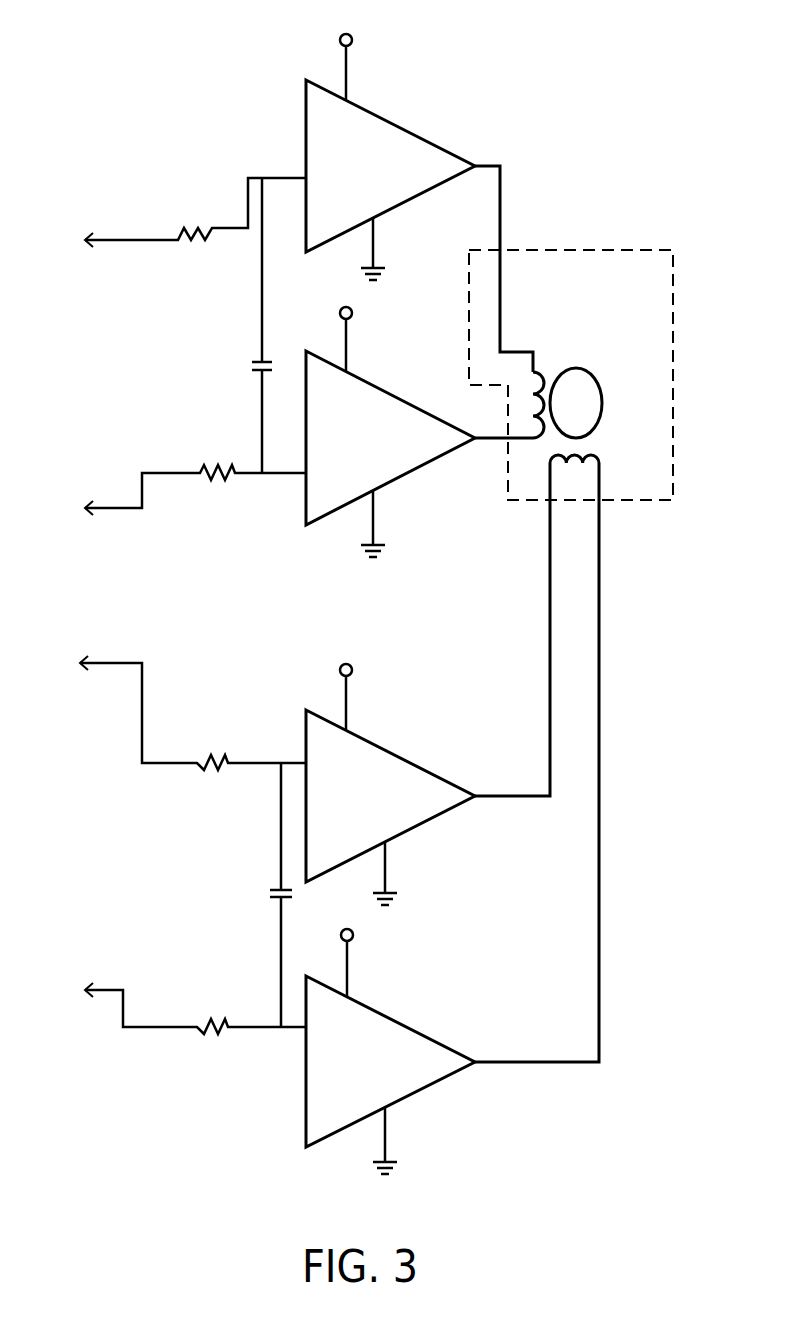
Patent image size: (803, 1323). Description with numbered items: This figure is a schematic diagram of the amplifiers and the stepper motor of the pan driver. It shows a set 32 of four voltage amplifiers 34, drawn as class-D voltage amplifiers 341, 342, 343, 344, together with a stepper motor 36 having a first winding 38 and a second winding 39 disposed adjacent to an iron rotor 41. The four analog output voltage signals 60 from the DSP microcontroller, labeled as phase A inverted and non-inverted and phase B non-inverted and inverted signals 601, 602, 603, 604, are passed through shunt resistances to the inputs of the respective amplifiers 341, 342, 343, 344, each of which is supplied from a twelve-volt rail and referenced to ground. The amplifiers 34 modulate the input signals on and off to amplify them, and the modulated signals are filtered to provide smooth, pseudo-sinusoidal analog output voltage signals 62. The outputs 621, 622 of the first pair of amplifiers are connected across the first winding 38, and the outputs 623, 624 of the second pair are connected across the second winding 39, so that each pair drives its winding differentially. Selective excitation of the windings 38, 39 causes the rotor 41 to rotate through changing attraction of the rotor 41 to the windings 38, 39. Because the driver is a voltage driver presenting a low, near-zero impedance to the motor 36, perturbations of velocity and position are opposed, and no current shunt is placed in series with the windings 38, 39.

The set of four voltage amplifiers 32 is at (461, 104).
The voltage amplifier 34 is at (387, 588).
The first voltage amplifier 341 is at (428, 137).
The second voltage amplifier 342 is at (428, 412).
The third voltage amplifier 343 is at (420, 765).
The fourth voltage amplifier 344 is at (433, 1037).
The stepper motor 36 is at (640, 247).
The first winding 38 is at (543, 373).
The second winding 39 is at (598, 453).
The iron rotor 41 is at (595, 373).
The analog output voltage signal 60 is at (184, 587).
The first analog output voltage signal 601 is at (117, 240).
The second analog output voltage signal 602 is at (113, 502).
The third analog output voltage signal 603 is at (103, 662).
The fourth analog output voltage signal 604 is at (93, 988).
The analog output voltage signal 62 is at (523, 648).
The first amplifier output signal 621 is at (502, 182).
The second amplifier output signal 622 is at (482, 440).
The third amplifier output signal 623 is at (520, 798).
The fourth amplifier output signal 624 is at (535, 1063).